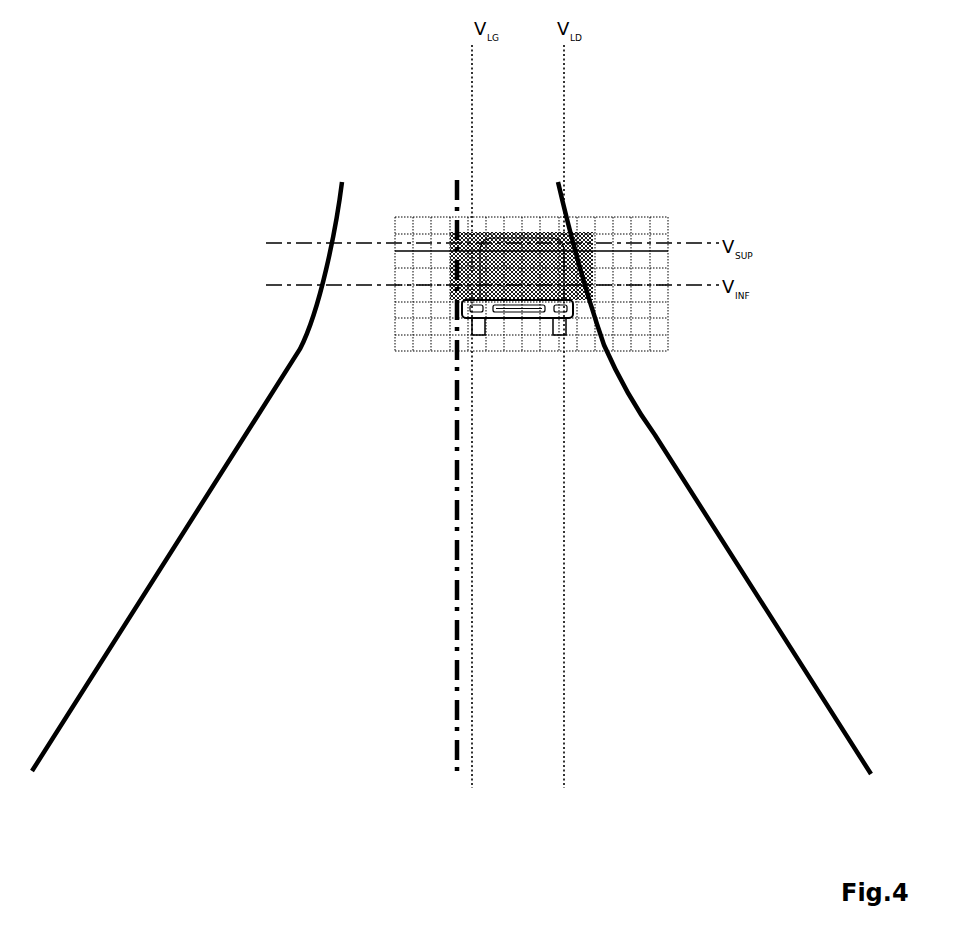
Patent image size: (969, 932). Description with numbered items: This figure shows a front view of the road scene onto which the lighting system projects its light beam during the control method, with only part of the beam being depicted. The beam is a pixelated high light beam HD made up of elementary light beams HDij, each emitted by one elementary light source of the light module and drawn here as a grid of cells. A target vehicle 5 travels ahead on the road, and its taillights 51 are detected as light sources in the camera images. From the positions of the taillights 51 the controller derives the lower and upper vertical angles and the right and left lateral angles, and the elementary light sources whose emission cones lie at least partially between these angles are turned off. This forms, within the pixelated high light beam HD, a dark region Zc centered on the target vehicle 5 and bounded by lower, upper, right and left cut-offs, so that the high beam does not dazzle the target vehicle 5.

The target vehicle 5 is at (512, 314).
The taillights 51 is at (458, 303).
The pixelated high light beam HD is at (672, 222).
The elementary light beams HDij is at (672, 345).
The dark region Zc is at (489, 232).